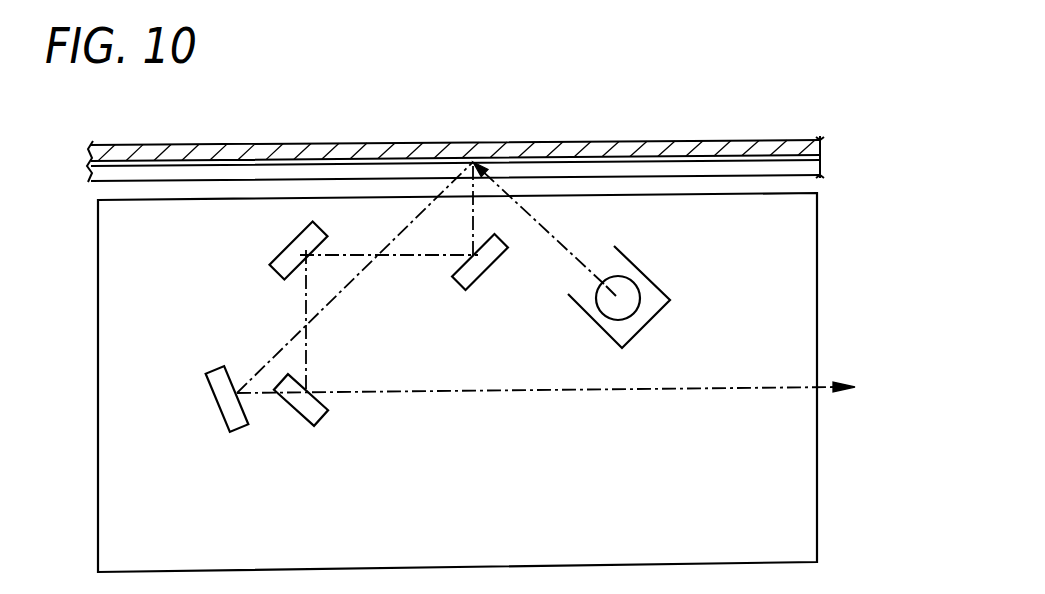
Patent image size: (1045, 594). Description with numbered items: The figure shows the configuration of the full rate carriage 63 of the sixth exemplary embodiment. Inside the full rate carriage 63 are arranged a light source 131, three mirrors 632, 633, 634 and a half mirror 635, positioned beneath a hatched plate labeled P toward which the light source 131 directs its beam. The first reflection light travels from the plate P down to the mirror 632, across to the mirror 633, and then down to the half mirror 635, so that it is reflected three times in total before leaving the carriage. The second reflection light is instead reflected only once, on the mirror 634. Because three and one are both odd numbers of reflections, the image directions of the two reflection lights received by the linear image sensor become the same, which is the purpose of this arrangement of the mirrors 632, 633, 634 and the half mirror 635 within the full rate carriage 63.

The full rate carriage 63 is at (834, 309).
The recording medium (paper) P is at (627, 140).
The light source 131 is at (641, 268).
The mirror 632 is at (480, 274).
The mirror 633 is at (284, 257).
The mirror 634 is at (222, 363).
The half mirror 635 is at (317, 416).